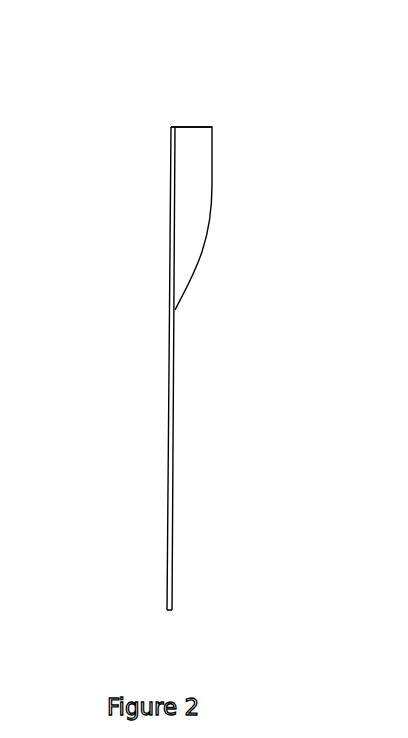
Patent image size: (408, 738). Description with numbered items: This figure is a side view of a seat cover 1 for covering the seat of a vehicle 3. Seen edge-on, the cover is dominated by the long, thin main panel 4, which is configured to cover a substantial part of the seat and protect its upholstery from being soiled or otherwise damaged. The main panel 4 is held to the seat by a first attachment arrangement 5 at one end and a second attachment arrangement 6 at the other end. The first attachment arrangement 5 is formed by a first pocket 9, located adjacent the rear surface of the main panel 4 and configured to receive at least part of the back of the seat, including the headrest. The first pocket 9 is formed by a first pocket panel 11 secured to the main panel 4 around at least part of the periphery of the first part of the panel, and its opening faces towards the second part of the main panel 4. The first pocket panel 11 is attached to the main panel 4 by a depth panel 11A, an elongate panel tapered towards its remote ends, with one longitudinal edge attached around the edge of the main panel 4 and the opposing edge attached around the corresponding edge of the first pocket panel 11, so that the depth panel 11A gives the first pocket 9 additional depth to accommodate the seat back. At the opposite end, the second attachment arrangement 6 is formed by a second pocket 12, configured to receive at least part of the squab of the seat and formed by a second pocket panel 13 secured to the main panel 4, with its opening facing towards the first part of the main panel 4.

The seat cover 1 is at (177, 331).
The vehicle 3 is at (3, 229).
The main panel 4 is at (168, 395).
The first attachment arrangement 5 is at (216, 185).
The second attachment arrangement 6 is at (182, 557).
The first pocket 9 is at (194, 218).
The first pocket panel 11 is at (214, 143).
The depth panel 11A is at (192, 150).
The second pocket 12 is at (165, 589).
The second pocket panel 13 is at (172, 567).